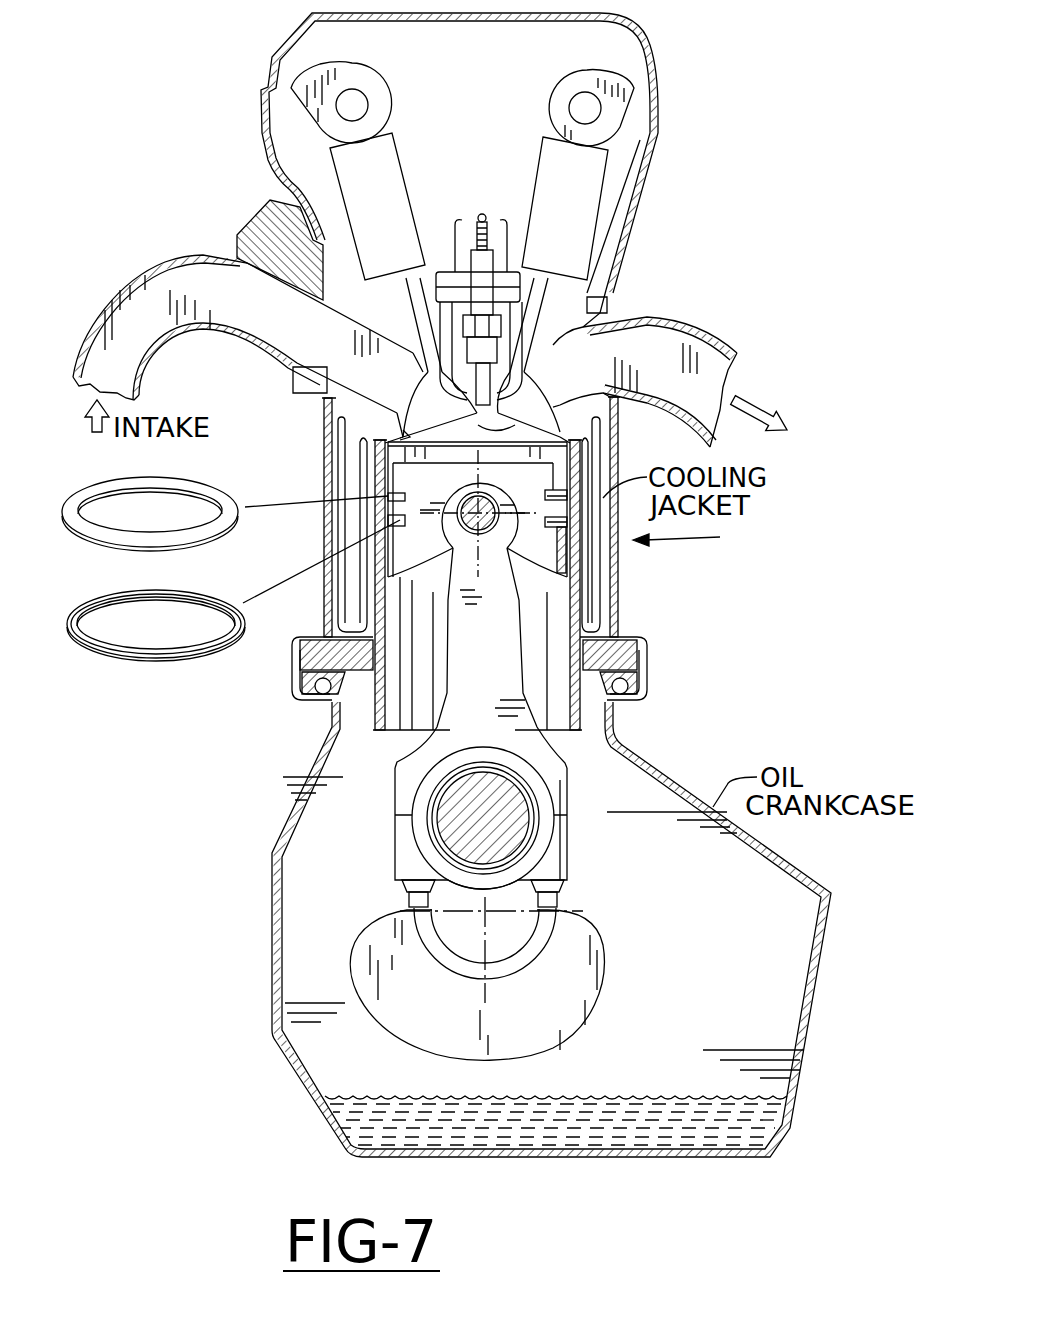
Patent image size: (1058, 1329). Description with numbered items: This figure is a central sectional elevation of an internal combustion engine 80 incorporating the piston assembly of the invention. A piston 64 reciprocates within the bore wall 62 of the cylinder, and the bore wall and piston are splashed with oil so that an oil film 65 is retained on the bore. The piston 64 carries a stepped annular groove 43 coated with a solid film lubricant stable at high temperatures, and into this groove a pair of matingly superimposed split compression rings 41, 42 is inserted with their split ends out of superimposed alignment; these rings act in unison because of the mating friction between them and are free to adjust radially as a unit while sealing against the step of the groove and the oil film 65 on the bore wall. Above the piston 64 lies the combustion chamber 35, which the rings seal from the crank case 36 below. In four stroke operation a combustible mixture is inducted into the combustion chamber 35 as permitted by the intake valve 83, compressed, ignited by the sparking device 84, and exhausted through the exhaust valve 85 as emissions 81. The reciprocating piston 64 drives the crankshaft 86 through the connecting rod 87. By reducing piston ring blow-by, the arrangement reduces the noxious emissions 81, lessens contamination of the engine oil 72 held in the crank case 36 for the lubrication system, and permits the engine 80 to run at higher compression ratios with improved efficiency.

The sparking device 84 is at (458, 270).
The exhaust valve 85 is at (610, 317).
The combustion chamber 35 is at (537, 366).
The emissions 81 is at (750, 400).
The intake valve 83 is at (432, 407).
The piston 64 is at (540, 463).
The split compression ring 41 is at (90, 482).
The split compression ring 42 is at (90, 603).
The internal combustion engine 80 is at (696, 539).
The bore wall 62 is at (565, 625).
The stepped annular groove 43 is at (545, 514).
The oil film 65 is at (383, 652).
The connecting rod 87 is at (464, 730).
The crank case 36 is at (684, 898).
The crankshaft 86 is at (590, 970).
The engine oil 72 is at (750, 1127).